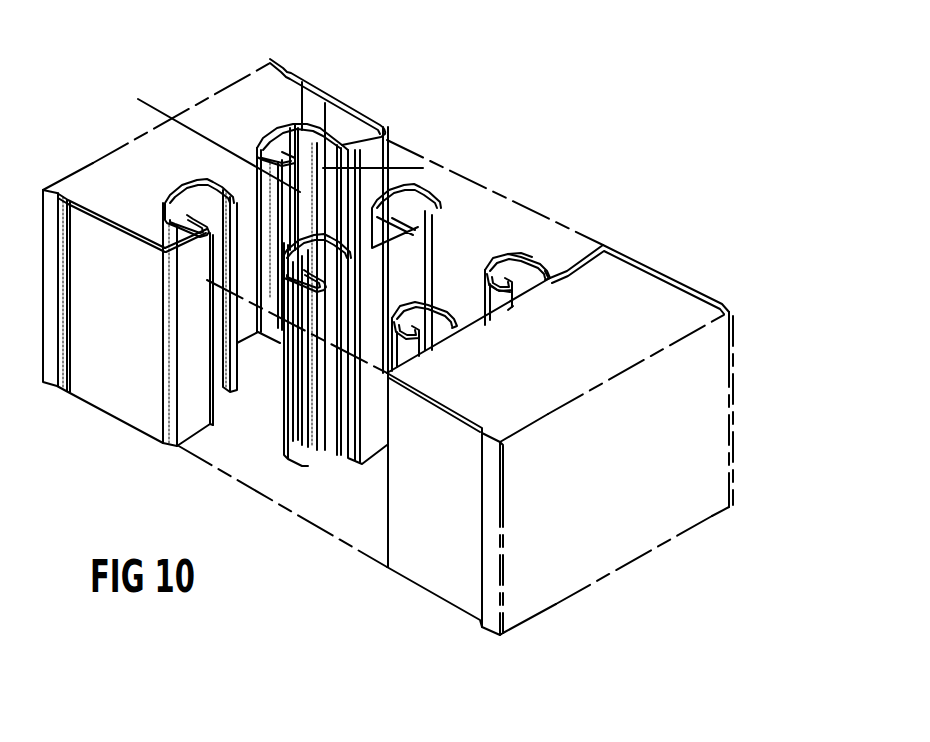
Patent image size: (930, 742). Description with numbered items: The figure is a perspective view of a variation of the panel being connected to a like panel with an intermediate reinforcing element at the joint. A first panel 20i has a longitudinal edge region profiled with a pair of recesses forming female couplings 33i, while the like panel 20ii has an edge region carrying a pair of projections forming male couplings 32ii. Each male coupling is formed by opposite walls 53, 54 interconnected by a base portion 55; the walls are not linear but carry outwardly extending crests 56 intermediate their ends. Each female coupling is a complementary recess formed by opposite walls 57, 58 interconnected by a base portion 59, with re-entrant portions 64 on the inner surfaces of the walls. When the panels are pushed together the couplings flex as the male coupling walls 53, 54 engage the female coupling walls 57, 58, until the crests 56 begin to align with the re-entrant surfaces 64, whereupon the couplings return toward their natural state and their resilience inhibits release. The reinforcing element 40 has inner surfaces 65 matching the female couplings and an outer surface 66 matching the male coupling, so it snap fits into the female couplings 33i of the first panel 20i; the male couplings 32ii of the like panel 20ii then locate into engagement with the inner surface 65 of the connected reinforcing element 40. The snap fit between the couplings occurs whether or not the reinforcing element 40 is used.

The first panel 20i is at (288, 93).
The like panel 20ii is at (665, 315).
The female couplings 33i is at (188, 235).
The male couplings 32ii is at (537, 288).
The wall of female coupling 58 is at (187, 200).
The base portion 59 is at (280, 147).
The wall of female coupling 57 is at (338, 146).
The re-entrant portions 64 is at (365, 168).
The inner surfaces 65 is at (320, 457).
The outer surface 66 is at (490, 247).
The base portion 55 is at (495, 260).
The wall of male coupling 53 is at (520, 254).
The crests 56 is at (540, 259).
The wall of male coupling 54 is at (513, 297).
The reinforcing element 40 is at (373, 433).